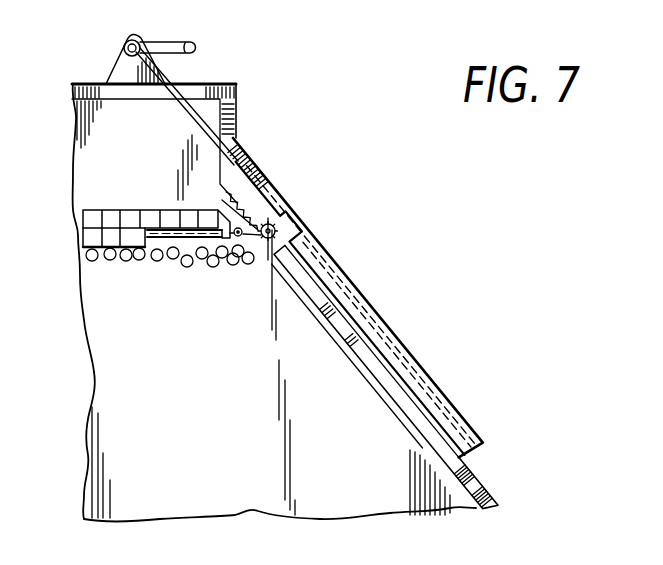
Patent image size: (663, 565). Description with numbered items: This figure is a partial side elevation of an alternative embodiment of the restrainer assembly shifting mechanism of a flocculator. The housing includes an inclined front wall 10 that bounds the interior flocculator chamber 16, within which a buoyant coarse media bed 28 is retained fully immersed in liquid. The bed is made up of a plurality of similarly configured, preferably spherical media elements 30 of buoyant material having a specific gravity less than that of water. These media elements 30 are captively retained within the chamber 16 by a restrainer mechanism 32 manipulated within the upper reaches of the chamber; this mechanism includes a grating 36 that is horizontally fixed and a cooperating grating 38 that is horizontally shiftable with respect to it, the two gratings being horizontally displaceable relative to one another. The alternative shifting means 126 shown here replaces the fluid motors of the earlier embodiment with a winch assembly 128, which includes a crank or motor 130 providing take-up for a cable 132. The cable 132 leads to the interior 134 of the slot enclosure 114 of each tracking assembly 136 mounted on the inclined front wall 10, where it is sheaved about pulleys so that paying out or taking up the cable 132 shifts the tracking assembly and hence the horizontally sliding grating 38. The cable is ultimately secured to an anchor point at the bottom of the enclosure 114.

The front wall 10 is at (473, 487).
The flocculator chamber 16 is at (217, 417).
The buoyant coarse media bed 28 is at (248, 266).
The media elements 30 is at (186, 266).
The restrainer mechanism 32 is at (143, 209).
The horizontally fixed grating 36 is at (80, 233).
The horizontally shiftable grating 38 is at (82, 222).
The slot enclosure 114 is at (380, 325).
The restrainer assembly shifting means 126 is at (176, 34).
The winch assembly 128 is at (108, 68).
The crank or motor 130 is at (155, 35).
The cable 132 is at (188, 108).
The interior of the slot enclosure 134 is at (423, 377).
The tracking assembly 136 is at (297, 213).